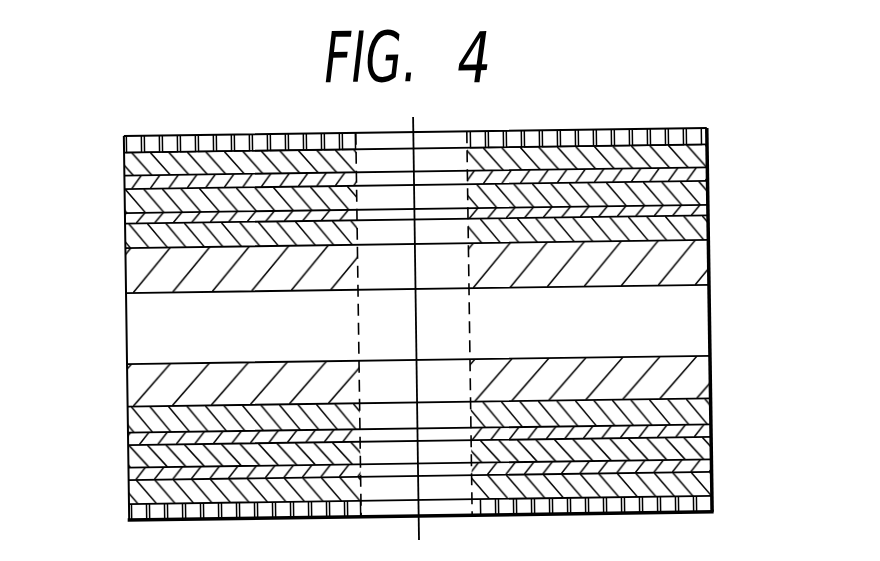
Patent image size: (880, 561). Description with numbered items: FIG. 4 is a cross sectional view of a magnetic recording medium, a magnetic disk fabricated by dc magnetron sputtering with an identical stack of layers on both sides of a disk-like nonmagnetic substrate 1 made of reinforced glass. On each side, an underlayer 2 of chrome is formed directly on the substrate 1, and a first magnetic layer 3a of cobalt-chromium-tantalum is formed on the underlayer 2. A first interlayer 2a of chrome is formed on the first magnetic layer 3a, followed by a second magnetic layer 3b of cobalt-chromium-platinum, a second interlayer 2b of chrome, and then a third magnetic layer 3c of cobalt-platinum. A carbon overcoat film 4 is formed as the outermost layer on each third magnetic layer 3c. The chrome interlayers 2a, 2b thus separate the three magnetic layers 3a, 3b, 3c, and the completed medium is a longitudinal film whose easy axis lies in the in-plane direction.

The nonmagnetic substrate 1 is at (685, 322).
The underlayer 2 is at (689, 264).
The first interlayer 2a is at (129, 214).
The second interlayer 2b is at (130, 180).
The first magnetic layer 3a is at (694, 227).
The second magnetic layer 3b is at (710, 192).
The third magnetic layer 3c is at (698, 160).
The carbon overcoat film 4 is at (700, 141).